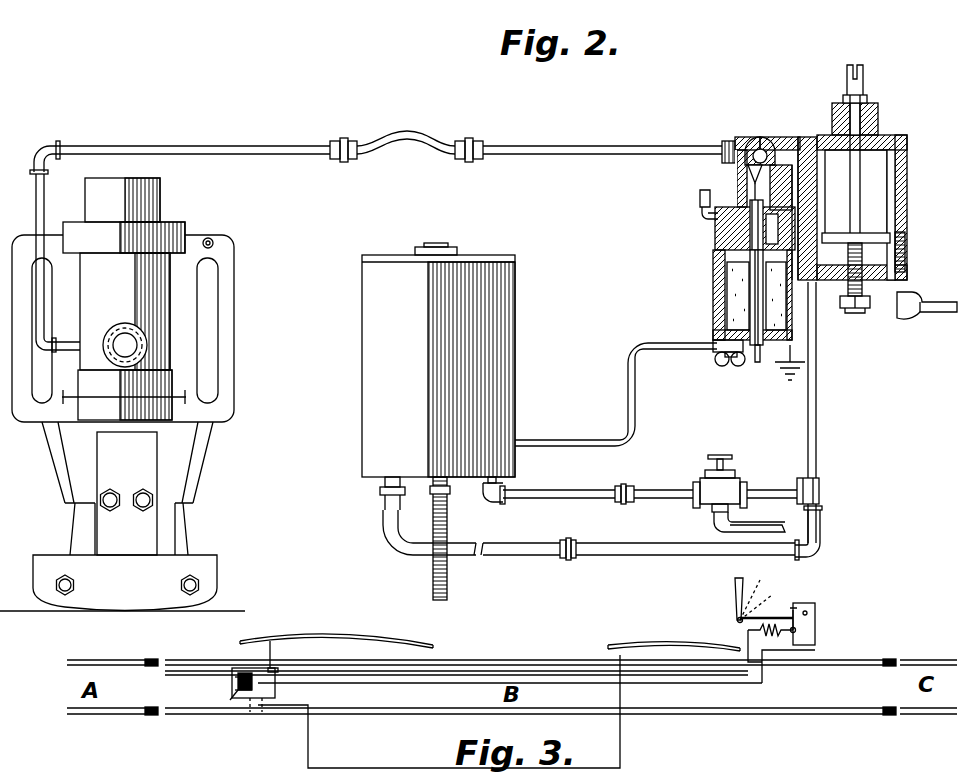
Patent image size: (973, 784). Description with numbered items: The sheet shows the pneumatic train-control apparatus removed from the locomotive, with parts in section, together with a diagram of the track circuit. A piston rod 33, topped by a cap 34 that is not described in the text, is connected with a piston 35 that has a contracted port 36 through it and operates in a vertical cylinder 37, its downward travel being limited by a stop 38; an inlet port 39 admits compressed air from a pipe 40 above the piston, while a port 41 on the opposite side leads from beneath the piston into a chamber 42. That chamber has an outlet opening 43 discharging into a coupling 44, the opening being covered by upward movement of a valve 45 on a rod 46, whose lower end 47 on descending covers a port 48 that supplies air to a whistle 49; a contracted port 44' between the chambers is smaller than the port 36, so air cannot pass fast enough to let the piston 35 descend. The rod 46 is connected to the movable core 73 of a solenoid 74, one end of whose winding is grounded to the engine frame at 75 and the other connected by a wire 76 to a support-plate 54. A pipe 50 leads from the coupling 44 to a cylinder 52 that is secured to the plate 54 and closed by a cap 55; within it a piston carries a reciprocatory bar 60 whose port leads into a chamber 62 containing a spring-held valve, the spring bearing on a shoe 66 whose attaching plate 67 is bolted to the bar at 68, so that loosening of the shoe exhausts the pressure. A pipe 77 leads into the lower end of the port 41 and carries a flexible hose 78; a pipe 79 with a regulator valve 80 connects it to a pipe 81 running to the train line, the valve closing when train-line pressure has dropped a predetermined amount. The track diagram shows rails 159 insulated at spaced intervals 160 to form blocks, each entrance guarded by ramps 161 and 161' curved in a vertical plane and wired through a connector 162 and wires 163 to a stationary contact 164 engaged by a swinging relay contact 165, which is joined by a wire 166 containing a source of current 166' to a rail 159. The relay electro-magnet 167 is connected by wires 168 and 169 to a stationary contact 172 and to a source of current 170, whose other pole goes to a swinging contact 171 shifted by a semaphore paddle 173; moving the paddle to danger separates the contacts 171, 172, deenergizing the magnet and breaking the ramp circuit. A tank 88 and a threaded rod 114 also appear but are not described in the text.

In FIG. 2, the pipe 50 is at (571, 151).
In FIG. 2, the cap 55 is at (160, 197).
In FIG. 2, the support-plate 54 is at (230, 255).
In FIG. 2, the cylinder 52 is at (127, 378).
In FIG. 2, the reciprocatory bar 60 is at (127, 493).
In FIG. 2, the bolts 68 is at (141, 489).
In FIG. 2, the attaching plate 67 is at (172, 531).
In FIG. 2, the shoe 66 is at (180, 553).
In FIG. 2, the tank 88 is at (438, 360).
In FIG. 2, the threaded rod 114 is at (448, 587).
In FIG. 2, the flexible hose 78 is at (542, 542).
In FIG. 2, the pipe 79 is at (640, 482).
In FIG. 2, the regulator valve 80 is at (730, 478).
In FIG. 2, the pipe 81 is at (770, 532).
In FIG. 2, the wire 76 is at (636, 400).
In FIG. 2, the pipe 77 is at (818, 416).
In FIG. 2, the ground connection 75 is at (800, 370).
In FIG. 2, the solenoid 74 is at (738, 291).
In FIG. 2, the core 73 is at (760, 302).
In FIG. 2, the port 48 is at (717, 240).
In FIG. 2, the whistle 49 is at (700, 198).
In FIG. 2, the valve 45 is at (737, 172).
In FIG. 2, the lower end of valve 47 is at (772, 228).
In FIG. 2, the contracted port 44' is at (712, 139).
In FIG. 2, the outlet opening 43 is at (748, 140).
In FIG. 2, the coupling 44 is at (776, 134).
In FIG. 2, the rod 46 is at (762, 137).
In FIG. 2, the chamber 42 is at (770, 182).
In FIG. 2, the port 41 is at (806, 228).
In FIG. 2, the valve stem cap 34 is at (867, 73).
In FIG. 2, the piston rod 33 is at (860, 170).
In FIG. 2, the cylinder 37 is at (880, 192).
In FIG. 2, the contracted port 36 is at (868, 230).
In FIG. 2, the inlet port 39 is at (898, 240).
In FIG. 2, the piston 35 is at (892, 238).
In FIG. 2, the stop 38 is at (862, 313).
In FIG. 2, the pipe 40 is at (940, 302).
In FIG. 3, the track rails 159 is at (588, 651).
In FIG. 3, the insulated intervals 160 is at (150, 659).
In FIG. 3, the wire 169 is at (488, 671).
In FIG. 3, the wire 168 is at (400, 684).
In FIG. 3, the ramp 161 is at (336, 635).
In FIG. 3, the ramp 161' is at (674, 633).
In FIG. 3, the connector 162 is at (278, 669).
In FIG. 3, the stationary contact 164 is at (276, 689).
In FIG. 3, the wire 166 is at (211, 679).
In FIG. 3, the electro-magnet 167 is at (232, 689).
In FIG. 3, the source of current 166' is at (178, 686).
In FIG. 3, the swinging contact element 165 is at (262, 715).
In FIG. 3, the chamber 62 is at (236, 696).
In FIG. 3, the wires 163 is at (290, 668).
In FIG. 3, the source of current 170 is at (748, 630).
In FIG. 3, the semaphore paddle 173 is at (735, 593).
In FIG. 3, the stationary contact 172 is at (815, 611).
In FIG. 3, the swinging contact 171 is at (790, 663).